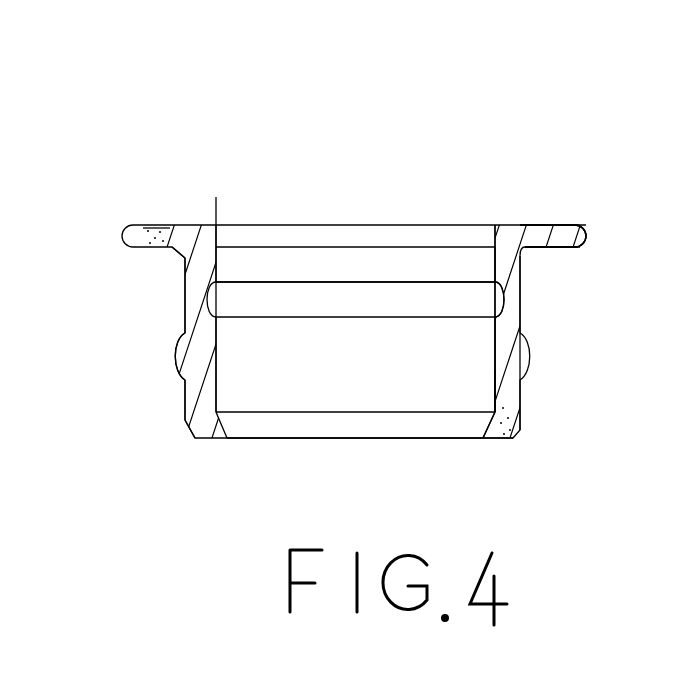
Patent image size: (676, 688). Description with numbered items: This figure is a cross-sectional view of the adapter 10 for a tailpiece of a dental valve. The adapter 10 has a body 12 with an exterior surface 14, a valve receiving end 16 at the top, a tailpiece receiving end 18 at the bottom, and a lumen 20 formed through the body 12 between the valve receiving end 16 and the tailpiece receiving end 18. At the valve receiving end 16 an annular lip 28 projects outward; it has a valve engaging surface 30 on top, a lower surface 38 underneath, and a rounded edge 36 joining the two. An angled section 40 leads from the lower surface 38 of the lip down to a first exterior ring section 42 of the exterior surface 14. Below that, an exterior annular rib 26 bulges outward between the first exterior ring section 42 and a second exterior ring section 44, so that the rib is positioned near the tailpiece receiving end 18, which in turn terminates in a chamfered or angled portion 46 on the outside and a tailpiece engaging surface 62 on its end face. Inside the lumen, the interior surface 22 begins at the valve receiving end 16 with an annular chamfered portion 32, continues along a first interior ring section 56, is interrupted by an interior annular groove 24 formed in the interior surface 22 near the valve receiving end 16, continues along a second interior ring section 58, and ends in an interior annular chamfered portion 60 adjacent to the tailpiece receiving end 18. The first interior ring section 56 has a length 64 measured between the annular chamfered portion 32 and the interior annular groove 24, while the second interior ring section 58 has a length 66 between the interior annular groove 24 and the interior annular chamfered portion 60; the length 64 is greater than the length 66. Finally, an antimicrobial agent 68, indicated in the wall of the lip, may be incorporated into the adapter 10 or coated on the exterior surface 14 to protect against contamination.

The adapter 10 is at (325, 95).
The body 12 is at (96, 397).
The exterior surface 14 is at (520, 310).
The valve receiving end 16 is at (451, 190).
The tailpiece receiving end 18 is at (287, 465).
The lumen 20 is at (353, 278).
The interior surface 22 is at (485, 348).
The interior annular groove 24 is at (505, 301).
The exterior annular rib 26 is at (175, 353).
The annular lip 28 is at (597, 197).
The valve engaging surface 30 is at (558, 225).
The annular chamfered portion 32 is at (216, 225).
The rounded edge 36 is at (590, 238).
The lower surface 38 is at (560, 248).
The angled section 40 is at (177, 248).
The first exterior ring section 42 is at (185, 295).
The second exterior ring section 44 is at (185, 400).
The chamfered or angled portion 46 is at (190, 430).
The first interior ring section 56 is at (216, 262).
The second interior ring section 58 is at (216, 368).
The interior annular chamfered portion 60 is at (492, 415).
The tailpiece engaging surface 62 is at (495, 440).
The length 64 is at (492, 263).
The length 66 is at (493, 385).
The antimicrobial agent 68 is at (152, 225).